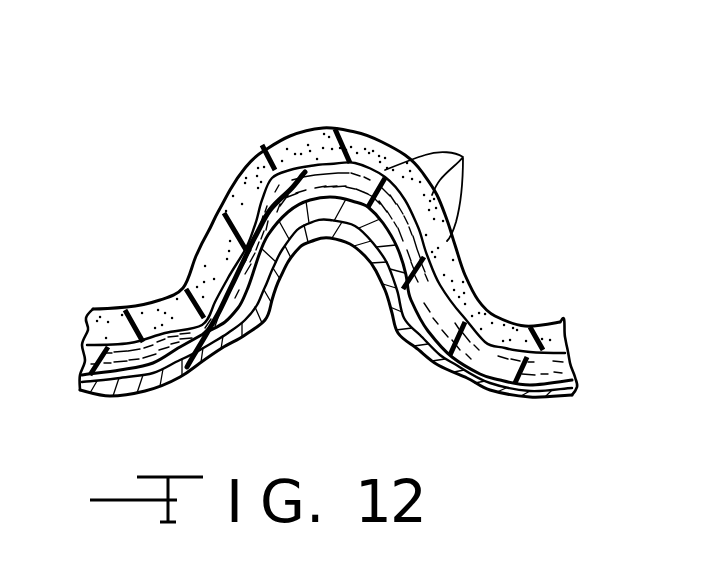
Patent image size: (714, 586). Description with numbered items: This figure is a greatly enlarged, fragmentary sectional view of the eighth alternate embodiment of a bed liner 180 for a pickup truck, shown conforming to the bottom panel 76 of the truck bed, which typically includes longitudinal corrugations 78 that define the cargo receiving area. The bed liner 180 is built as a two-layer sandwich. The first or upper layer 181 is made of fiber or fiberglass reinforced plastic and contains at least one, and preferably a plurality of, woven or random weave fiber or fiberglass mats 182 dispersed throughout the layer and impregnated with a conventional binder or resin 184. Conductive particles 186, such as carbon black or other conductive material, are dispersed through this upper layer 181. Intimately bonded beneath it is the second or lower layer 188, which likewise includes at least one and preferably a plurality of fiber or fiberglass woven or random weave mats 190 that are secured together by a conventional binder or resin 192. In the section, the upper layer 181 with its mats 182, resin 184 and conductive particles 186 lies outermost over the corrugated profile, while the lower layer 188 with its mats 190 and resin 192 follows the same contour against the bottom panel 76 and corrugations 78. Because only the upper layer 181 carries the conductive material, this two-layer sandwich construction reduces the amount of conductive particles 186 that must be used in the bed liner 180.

The bed liner 180 is at (466, 104).
The first or upper layer 181 is at (213, 240).
The fiber or fiberglass mats 182 is at (453, 280).
The binder or resin 184 is at (228, 203).
The conductive particles 186 is at (463, 157).
The second or lower layer 188 is at (417, 317).
The fiber or fiberglass woven or random weave mats 190 is at (463, 350).
The binder or resin 192 is at (216, 322).
The longitudinal corrugations 78 is at (330, 239).
The bottom panel 76 is at (523, 403).